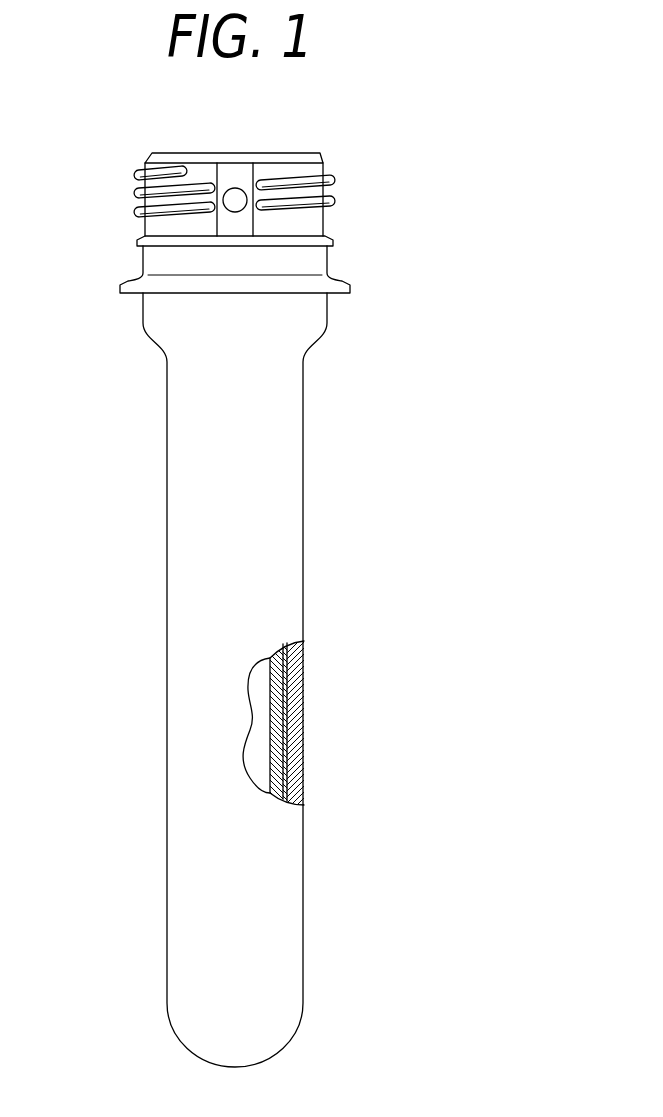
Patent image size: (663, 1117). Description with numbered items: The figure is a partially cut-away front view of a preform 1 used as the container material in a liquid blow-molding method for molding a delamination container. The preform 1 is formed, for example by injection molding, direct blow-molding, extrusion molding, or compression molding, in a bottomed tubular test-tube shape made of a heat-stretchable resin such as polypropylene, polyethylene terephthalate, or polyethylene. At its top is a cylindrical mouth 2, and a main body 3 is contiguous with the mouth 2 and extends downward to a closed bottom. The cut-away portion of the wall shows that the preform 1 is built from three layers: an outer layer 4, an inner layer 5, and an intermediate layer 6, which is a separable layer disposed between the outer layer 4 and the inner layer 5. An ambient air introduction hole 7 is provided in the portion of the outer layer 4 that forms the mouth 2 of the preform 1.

The preform 1 is at (374, 374).
The mouth 2 is at (140, 193).
The main body 3 is at (207, 594).
The outer layer 4 is at (297, 755).
The inner layer 5 is at (272, 717).
The intermediate layer 6 is at (286, 698).
The ambient air introduction hole 7 is at (233, 193).